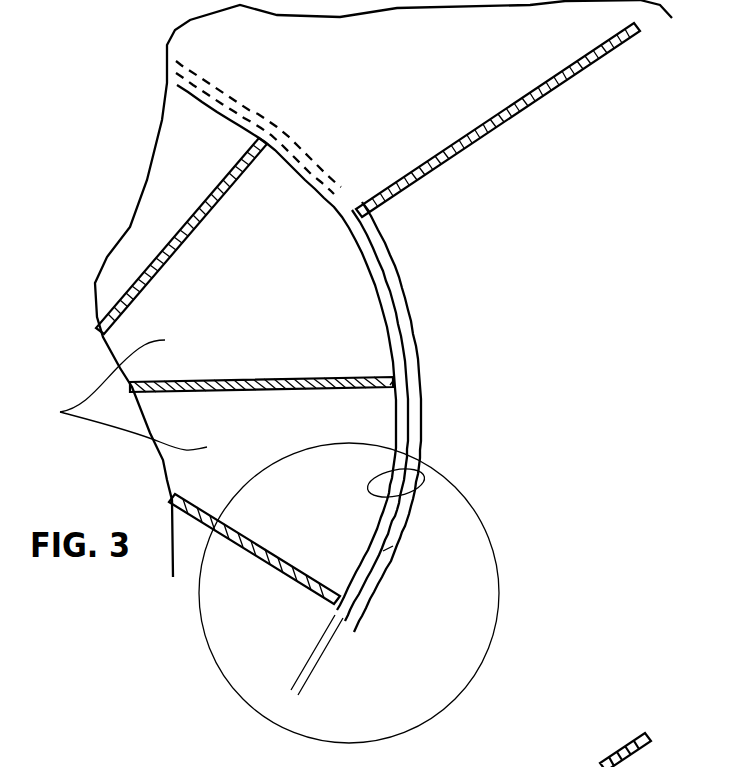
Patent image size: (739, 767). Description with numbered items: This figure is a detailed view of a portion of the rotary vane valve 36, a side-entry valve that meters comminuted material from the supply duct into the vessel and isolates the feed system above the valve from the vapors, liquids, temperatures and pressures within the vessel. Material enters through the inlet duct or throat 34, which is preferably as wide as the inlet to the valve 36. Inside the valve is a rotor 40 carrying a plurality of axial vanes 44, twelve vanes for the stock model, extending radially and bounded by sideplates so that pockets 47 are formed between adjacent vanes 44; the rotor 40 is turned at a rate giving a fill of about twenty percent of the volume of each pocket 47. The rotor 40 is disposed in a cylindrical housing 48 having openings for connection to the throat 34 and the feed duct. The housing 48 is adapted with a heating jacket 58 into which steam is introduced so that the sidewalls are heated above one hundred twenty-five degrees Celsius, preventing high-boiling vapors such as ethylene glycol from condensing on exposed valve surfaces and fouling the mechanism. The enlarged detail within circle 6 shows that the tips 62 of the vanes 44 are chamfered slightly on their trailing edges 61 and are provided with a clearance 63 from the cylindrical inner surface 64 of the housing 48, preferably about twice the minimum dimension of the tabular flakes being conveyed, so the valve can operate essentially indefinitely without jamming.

The enlarged detail circle 6 is at (500, 573).
The inlet duct or throat 34 is at (379, 87).
The rotary vane valve 36 is at (378, 346).
The rotor 40 is at (401, 432).
The axial vanes 44 is at (190, 233).
The pockets 47 is at (78, 412).
The cylindrical housing 48 is at (383, 551).
The heating jacket 58 is at (385, 286).
The trailing edges 61 is at (390, 394).
The tips 62 is at (400, 378).
The clearance 63 is at (266, 642).
The cylindrical inner surface 64 is at (424, 468).